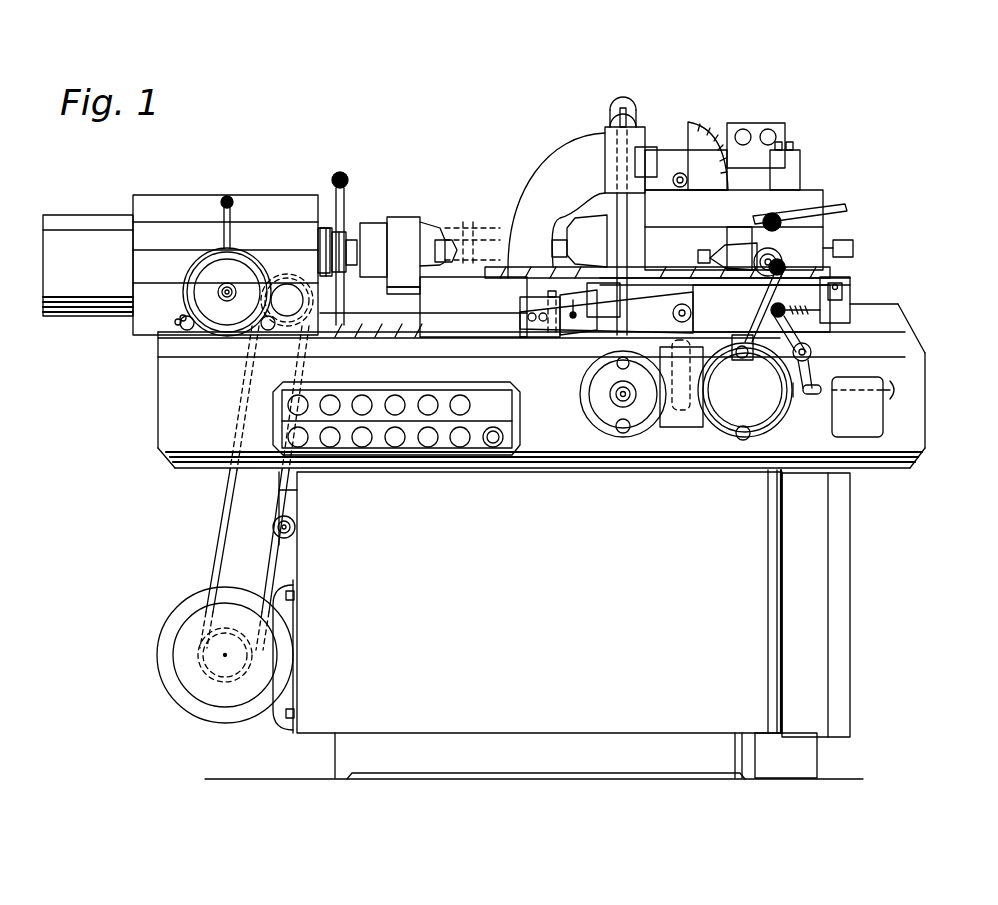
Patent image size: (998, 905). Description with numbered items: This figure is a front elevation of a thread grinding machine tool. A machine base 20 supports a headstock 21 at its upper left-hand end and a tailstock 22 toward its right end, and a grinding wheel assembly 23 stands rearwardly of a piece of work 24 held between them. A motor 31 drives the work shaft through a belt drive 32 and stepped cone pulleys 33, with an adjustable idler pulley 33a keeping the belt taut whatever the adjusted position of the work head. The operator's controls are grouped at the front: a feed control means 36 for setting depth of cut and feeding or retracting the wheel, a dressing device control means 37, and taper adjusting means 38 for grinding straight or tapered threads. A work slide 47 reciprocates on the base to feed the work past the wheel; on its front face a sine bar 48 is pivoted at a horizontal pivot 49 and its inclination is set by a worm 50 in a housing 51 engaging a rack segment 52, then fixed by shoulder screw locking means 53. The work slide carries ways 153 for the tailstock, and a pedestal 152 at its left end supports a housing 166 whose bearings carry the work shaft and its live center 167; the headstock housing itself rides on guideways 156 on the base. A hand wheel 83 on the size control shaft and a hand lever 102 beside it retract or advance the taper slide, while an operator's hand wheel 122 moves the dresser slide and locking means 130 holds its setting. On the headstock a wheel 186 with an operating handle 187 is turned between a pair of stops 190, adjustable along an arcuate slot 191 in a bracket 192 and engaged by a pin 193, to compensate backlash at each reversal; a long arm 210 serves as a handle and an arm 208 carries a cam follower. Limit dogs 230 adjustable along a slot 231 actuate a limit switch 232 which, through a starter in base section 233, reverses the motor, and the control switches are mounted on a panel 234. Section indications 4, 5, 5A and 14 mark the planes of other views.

The machine base 20 is at (782, 610).
The headstock 21 is at (243, 191).
The tailstock 22 is at (813, 236).
The grinding wheel assembly 23 is at (817, 187).
The piece of work 24 is at (492, 242).
The motor 31 is at (182, 614).
The belt drive 32 is at (221, 521).
The stepped cone pulleys 33 is at (229, 676).
The adjustable idler pulley 33a is at (282, 522).
The feed control means 36 is at (785, 421).
The dressing device control means 37 is at (585, 408).
The taper adjusting means 38 is at (712, 260).
The work slide 47 is at (433, 297).
The sine bar 48 is at (680, 303).
The horizontal pivot 49 is at (695, 314).
The worm 50 is at (535, 308).
The housing 51 is at (542, 333).
The rack segment 52 is at (553, 296).
The shoulder screw locking means 53 is at (572, 320).
The section block 5A is at (668, 381).
The hand wheel 83 is at (775, 398).
The hand lever 102 is at (772, 302).
The operator's hand wheel 122 is at (630, 428).
The locking means 130 is at (616, 364).
The pedestal 152 is at (412, 231).
The ways 153 is at (708, 243).
The guideways 156 is at (370, 334).
The housing 166 is at (376, 226).
The live center 167 is at (453, 250).
The wheel 186 is at (197, 270).
The operating handle 187 is at (231, 234).
The stops 190 is at (204, 360).
The arcuate slot 191 is at (183, 317).
The bracket 192 is at (180, 323).
The pin 193 is at (531, 369).
The arm 208 is at (340, 291).
The long arm 210 is at (347, 182).
The limit dogs 230 is at (600, 320).
The slot 231 is at (822, 278).
The limit switch 232 is at (880, 432).
The base section 233 is at (818, 560).
The panel 234 is at (443, 453).
The section line 4 is at (540, 367).
The section line 5 is at (623, 75).
The section line 14 is at (858, 372).